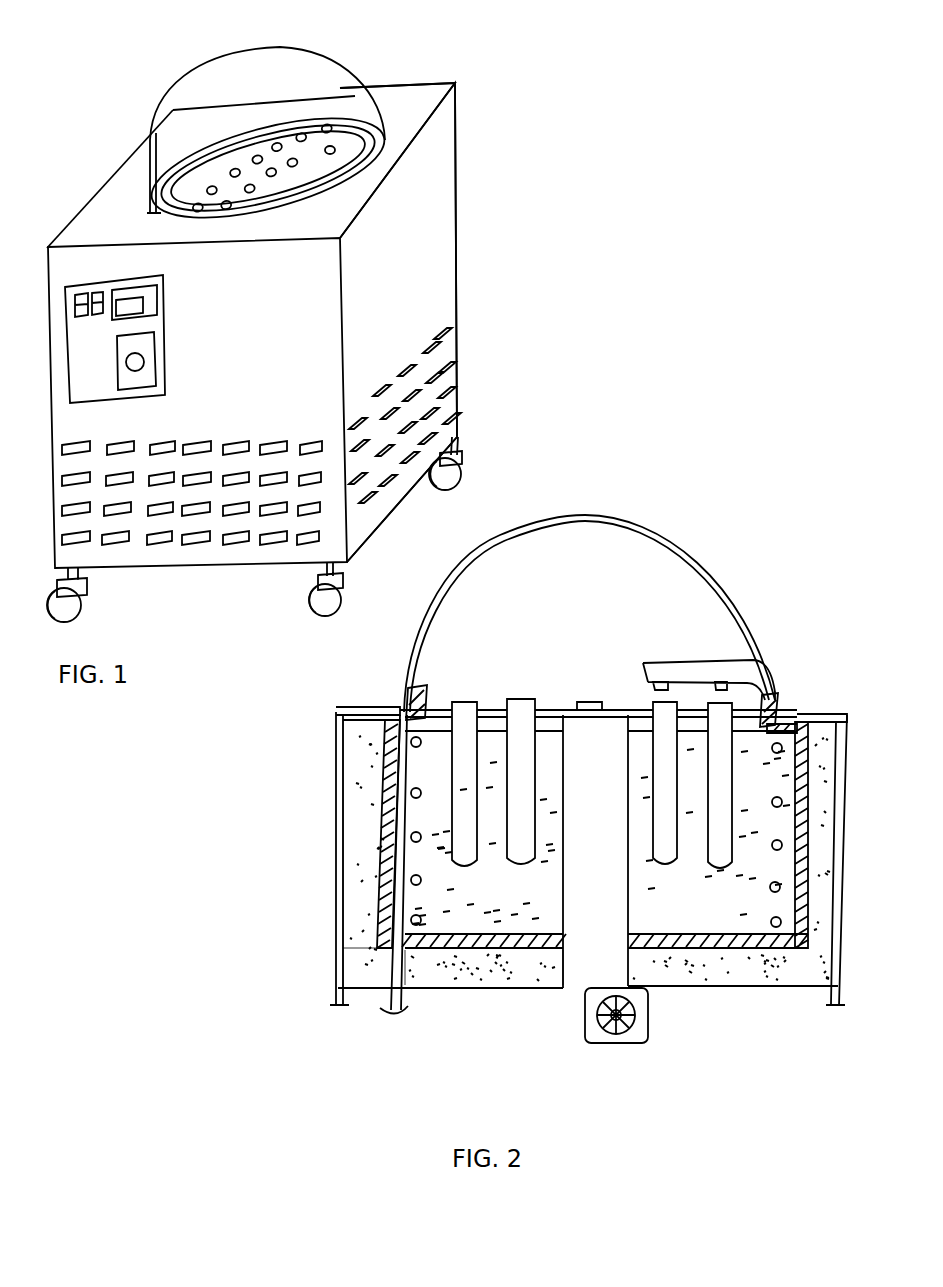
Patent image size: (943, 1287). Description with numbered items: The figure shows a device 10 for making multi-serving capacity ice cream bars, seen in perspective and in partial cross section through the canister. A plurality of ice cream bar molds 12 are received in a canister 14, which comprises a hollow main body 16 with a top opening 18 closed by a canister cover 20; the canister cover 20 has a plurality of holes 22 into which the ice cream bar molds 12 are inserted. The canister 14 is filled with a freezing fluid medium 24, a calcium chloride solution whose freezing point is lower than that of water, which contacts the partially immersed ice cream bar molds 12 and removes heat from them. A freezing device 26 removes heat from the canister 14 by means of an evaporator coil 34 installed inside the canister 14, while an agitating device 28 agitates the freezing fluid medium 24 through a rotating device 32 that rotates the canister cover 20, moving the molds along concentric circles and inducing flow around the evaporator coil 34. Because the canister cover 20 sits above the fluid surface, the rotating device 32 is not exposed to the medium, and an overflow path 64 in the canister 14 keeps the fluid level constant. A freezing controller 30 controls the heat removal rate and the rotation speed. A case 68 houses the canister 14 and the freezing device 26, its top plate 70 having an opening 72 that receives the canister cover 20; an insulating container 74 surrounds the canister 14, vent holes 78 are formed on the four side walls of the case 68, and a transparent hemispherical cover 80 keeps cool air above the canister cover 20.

In FIG. 1, the device 10 is at (566, 109).
In FIG. 2, the ice cream bar molds 12 is at (715, 866).
In FIG. 2, the canister 14 is at (411, 794).
In FIG. 2, the hollow main body 16 is at (470, 948).
In FIG. 1, the top opening 18 is at (373, 150).
In FIG. 2, the top opening 18 is at (436, 695).
In FIG. 1, the canister cover 20 is at (343, 145).
In FIG. 2, the canister cover 20 is at (485, 710).
In FIG. 1, the holes 22 is at (208, 175).
In FIG. 2, the freezing fluid medium 24 is at (380, 915).
In FIG. 2, the freezing device 26 is at (392, 753).
In FIG. 2, the agitating device 28 is at (547, 692).
In FIG. 1, the freezing controller 30 is at (68, 367).
In FIG. 2, the rotating device 32 is at (578, 986).
In FIG. 2, the evaporator coil 34 is at (772, 887).
In FIG. 2, the overflow path 64 is at (386, 1007).
In FIG. 1, the case 68 is at (455, 278).
In FIG. 1, the top plate 70 is at (418, 100).
In FIG. 1, the opening 72 is at (350, 180).
In FIG. 2, the insulating container 74 is at (433, 992).
In FIG. 1, the vent holes 78 is at (307, 543).
In FIG. 1, the transparent hemispherical cover 80 is at (333, 55).
In FIG. 2, the transparent hemispherical cover 80 is at (738, 590).